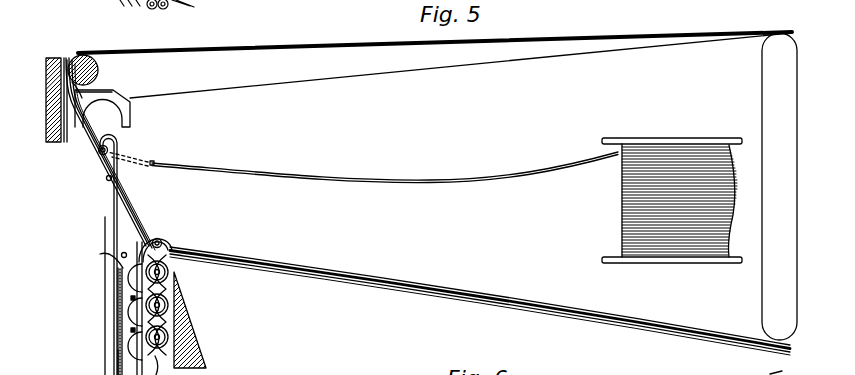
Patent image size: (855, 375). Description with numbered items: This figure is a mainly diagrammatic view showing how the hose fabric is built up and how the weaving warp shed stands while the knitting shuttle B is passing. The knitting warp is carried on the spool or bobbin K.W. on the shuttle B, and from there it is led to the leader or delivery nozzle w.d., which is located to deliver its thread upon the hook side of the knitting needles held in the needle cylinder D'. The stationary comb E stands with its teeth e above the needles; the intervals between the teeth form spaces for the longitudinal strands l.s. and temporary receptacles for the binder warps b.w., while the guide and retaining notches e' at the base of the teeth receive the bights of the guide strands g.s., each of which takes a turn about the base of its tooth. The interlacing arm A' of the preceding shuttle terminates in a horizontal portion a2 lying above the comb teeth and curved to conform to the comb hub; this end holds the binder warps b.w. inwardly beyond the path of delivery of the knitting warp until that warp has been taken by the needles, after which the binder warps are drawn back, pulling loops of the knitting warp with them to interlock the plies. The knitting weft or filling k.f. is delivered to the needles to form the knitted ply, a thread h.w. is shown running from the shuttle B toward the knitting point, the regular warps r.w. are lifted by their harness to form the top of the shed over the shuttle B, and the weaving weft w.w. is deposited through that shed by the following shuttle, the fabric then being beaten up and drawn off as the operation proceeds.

The comb E is at (53, 56).
The horizontal portion of interlacing arm a2 is at (83, 52).
The interlacing arm A' is at (95, 61).
The comb teeth e is at (116, 101).
The guide and retaining notches e' is at (108, 78).
The binder warps b.w. is at (326, 48).
The guide strands g.s. is at (467, 58).
The knitting shuttle B is at (773, 186).
The knitting warp spool or bobbin K.W. is at (672, 191).
The holding wire h.w. is at (468, 178).
The longitudinal strands l.s. is at (106, 195).
The leader or delivery nozzle w.d. is at (98, 153).
The knitting weft or filling k.f. is at (133, 332).
The needle cylinder D' is at (89, 362).
The weaving weft w.w. is at (168, 284).
The regular warps r.w. is at (361, 275).